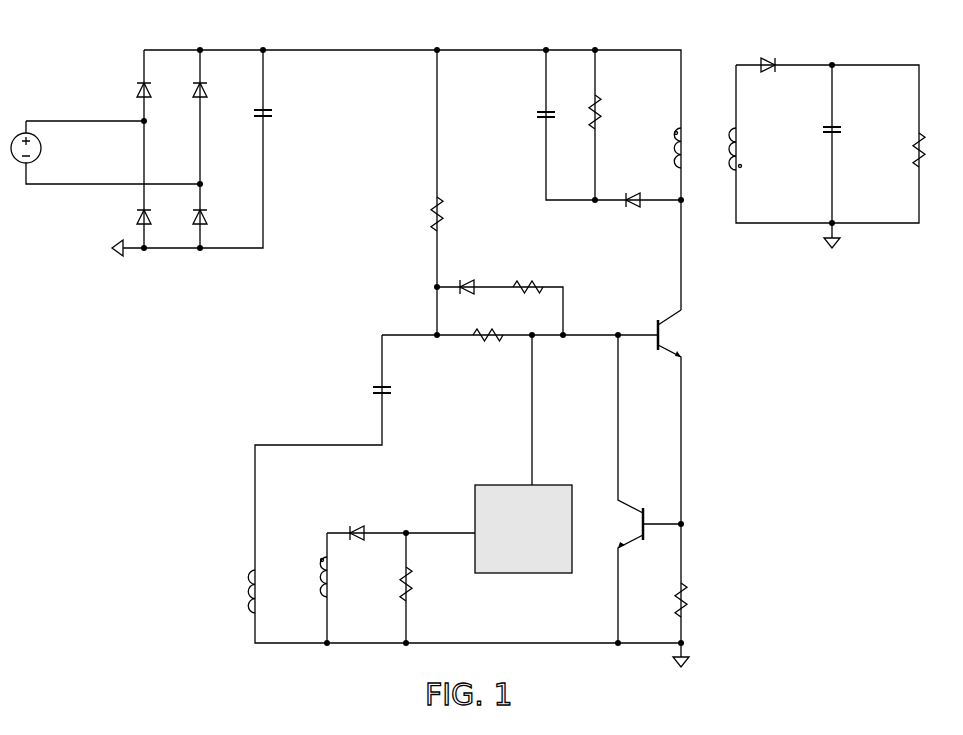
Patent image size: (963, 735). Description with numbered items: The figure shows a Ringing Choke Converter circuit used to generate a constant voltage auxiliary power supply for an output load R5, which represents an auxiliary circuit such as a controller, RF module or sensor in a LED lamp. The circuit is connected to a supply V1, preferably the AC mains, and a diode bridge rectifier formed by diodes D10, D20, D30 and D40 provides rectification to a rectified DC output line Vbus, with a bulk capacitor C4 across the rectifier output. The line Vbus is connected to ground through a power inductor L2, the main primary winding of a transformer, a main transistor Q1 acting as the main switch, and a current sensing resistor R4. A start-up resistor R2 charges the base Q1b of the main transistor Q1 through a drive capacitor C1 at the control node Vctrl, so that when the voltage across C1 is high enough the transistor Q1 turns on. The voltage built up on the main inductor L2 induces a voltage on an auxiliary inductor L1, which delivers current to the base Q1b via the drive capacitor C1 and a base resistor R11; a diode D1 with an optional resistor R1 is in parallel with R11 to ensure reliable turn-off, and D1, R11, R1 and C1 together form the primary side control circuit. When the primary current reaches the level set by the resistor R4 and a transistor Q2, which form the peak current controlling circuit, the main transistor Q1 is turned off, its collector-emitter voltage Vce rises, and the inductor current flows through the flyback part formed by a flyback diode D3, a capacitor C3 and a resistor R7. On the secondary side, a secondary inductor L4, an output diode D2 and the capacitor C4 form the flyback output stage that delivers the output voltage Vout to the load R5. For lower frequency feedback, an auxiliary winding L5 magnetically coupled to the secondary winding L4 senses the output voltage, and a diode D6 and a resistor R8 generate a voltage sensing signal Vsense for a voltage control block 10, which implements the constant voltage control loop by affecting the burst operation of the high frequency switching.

The voltage control block 10 is at (550, 485).
The supply V1 is at (39, 152).
The diode D10 is at (127, 77).
The diode D20 is at (184, 77).
The diode D30 is at (127, 206).
The diode D40 is at (184, 206).
The capacitor C4 is at (557, 125).
The resistor R2 is at (451, 211).
The capacitor C3 is at (536, 103).
The resistor R7 is at (607, 109).
The power inductor L2 is at (690, 133).
The flyback diode D3 is at (636, 188).
The diode D1 is at (465, 274).
The resistor R1 is at (531, 273).
The base resistor R11 is at (492, 319).
The drive capacitor C1 is at (391, 376).
The main transistor Q1 is at (681, 335).
The base of the main transistor Q1b is at (656, 333).
The collector-emitter voltage Vce is at (660, 296).
The control voltage node Vctrl is at (394, 316).
The rectified DC output line Vbus is at (473, 36).
The transistor Q2 is at (620, 524).
The current sensing resistor R4 is at (696, 596).
The auxiliary inductor L1 is at (241, 591).
The auxiliary winding L5 is at (308, 577).
The diode D6 is at (355, 520).
The voltage sensing signal Vsense is at (422, 518).
The resistor R8 is at (420, 582).
The output diode D2 is at (766, 54).
The output voltage Vout is at (909, 53).
The secondary side inductor L4 is at (725, 163).
The output load R5 is at (902, 155).